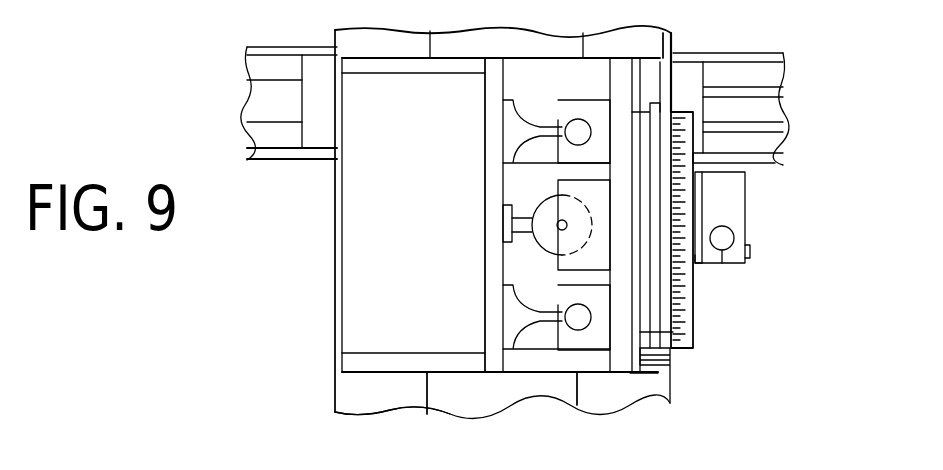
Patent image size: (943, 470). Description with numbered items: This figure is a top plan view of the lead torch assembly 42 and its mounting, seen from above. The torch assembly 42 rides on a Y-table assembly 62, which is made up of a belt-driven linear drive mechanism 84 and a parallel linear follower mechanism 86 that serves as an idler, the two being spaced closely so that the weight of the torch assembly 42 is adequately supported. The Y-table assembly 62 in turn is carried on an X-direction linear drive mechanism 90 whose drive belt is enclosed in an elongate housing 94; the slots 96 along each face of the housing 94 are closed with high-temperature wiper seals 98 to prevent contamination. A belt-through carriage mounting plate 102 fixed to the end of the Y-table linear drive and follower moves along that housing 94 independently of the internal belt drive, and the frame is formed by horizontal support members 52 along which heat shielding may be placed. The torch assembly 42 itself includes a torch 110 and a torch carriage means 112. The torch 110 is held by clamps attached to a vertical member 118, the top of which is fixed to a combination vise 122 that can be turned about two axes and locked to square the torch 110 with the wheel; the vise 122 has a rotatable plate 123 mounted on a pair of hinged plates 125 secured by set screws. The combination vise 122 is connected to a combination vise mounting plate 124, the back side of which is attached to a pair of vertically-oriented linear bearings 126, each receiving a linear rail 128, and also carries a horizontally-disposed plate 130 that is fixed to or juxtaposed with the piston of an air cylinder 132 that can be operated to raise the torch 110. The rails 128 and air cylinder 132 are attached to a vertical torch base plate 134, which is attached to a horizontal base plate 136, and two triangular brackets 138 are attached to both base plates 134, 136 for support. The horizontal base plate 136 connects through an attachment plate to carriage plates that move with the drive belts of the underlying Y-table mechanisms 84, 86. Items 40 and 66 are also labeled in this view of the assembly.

The rail 40 is at (260, 134).
The lead torch assembly 42 is at (360, 290).
The horizontal support member 52 is at (742, 52).
The Y-table assembly 62 is at (385, 397).
The rail member 66 is at (778, 75).
The linear drive mechanism 84 is at (428, 395).
The linear follower mechanism 86 is at (655, 385).
The X-direction linear drive mechanism 90 is at (768, 108).
The elongate housing 94 is at (770, 143).
The slots 96 is at (257, 85).
The wiper seals 98 is at (257, 120).
The belt-through carriage mounting plate 102 is at (685, 78).
The torch 110 is at (745, 221).
The torch carriage means 112 is at (694, 314).
The vertical member 118 is at (695, 262).
The combination vise 122 is at (684, 356).
The rotatable plate 123 is at (693, 335).
The combination vise mounting plate 124 is at (620, 360).
The hinged plates 125 is at (668, 340).
The linear bearings 126 is at (587, 110).
The linear rail 128 is at (513, 132).
The horizontally-disposed plate 130 is at (573, 187).
The air cylinder 132 is at (548, 238).
The vertical torch base plate 134 is at (497, 186).
The horizontal base plate 136 is at (438, 245).
The triangular brackets 138 is at (410, 65).